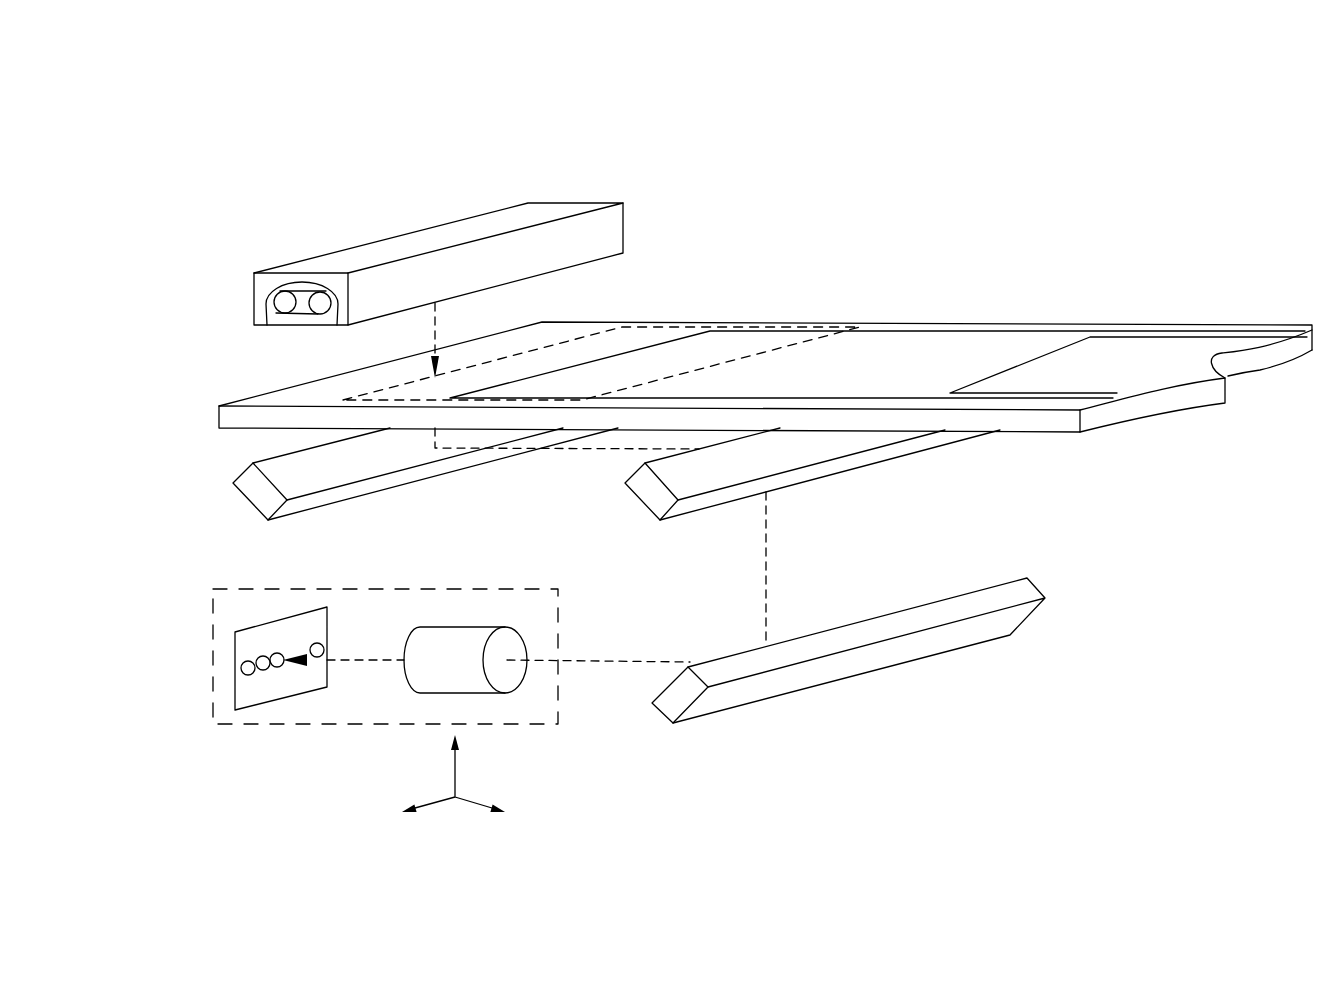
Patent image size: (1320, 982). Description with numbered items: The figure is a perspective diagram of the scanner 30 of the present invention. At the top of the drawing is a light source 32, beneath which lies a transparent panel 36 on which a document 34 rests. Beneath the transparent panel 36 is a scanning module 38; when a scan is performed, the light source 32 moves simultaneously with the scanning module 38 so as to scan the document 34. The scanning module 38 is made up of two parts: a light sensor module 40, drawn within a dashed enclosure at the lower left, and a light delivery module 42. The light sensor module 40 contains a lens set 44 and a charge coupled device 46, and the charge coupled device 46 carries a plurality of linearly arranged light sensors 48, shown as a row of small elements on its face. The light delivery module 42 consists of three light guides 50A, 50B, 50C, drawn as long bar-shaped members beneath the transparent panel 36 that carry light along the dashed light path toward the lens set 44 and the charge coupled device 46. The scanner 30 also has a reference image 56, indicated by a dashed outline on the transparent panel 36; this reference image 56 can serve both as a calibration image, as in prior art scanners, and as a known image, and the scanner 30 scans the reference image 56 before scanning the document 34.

The scanner 30 is at (1017, 185).
The light source 32 is at (580, 203).
The document 34 is at (1107, 347).
The transparent panel 36 is at (950, 347).
The reference image 56 is at (628, 325).
The scanning module 38 is at (190, 493).
The light guide 50A is at (463, 470).
The light guide 50B is at (890, 455).
The light guide 50C is at (838, 670).
The light delivery module 42 is at (1082, 522).
The light sensor module 40 is at (322, 735).
The lens set 44 is at (467, 627).
The charge coupled device 46 is at (272, 620).
The light sensors 48 is at (247, 685).